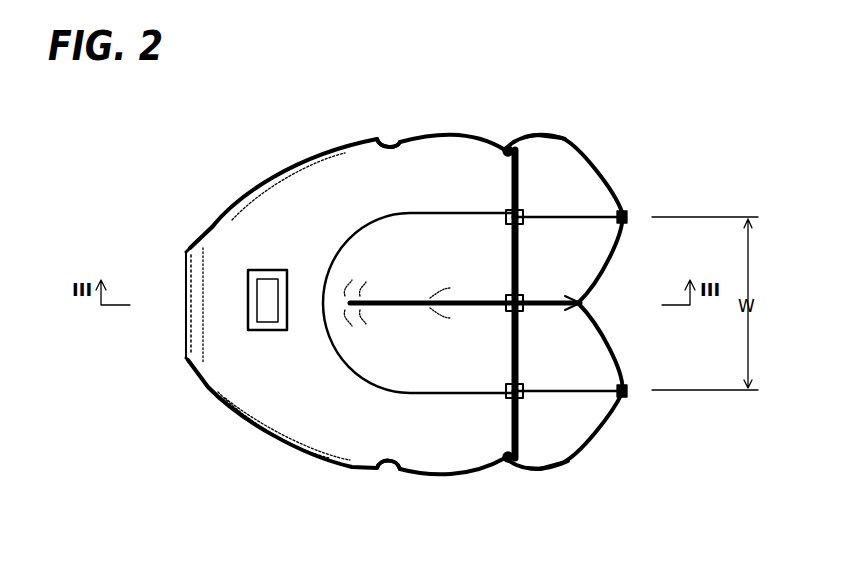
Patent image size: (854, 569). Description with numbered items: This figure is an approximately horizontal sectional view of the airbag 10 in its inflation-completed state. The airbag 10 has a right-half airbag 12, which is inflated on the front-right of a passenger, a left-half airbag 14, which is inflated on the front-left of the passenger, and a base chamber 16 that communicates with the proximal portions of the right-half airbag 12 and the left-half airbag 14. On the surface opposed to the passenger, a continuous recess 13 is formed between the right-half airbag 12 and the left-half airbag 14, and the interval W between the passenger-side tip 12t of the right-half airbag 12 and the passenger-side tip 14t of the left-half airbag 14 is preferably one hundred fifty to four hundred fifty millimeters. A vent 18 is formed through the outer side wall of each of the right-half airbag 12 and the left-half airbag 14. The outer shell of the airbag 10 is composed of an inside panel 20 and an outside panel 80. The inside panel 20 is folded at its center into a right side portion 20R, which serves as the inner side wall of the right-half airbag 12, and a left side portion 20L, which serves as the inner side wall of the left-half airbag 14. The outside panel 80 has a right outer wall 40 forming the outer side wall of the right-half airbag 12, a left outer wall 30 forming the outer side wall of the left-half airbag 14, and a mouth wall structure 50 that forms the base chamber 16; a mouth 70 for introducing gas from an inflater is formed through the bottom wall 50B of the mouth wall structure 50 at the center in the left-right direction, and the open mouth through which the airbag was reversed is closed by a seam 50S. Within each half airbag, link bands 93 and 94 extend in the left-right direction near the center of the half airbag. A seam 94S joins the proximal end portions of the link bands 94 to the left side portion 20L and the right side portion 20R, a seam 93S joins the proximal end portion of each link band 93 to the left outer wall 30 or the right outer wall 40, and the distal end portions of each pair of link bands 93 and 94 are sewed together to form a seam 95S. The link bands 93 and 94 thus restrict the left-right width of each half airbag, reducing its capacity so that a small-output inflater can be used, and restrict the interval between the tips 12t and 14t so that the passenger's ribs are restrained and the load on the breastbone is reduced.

The airbag 10 is at (613, 288).
The right-half airbag 12 is at (597, 196).
The tip of the right-half airbag 12t is at (630, 218).
The recess 13 is at (592, 300).
The left-half airbag 14 is at (597, 395).
The tip of the left-half airbag 14t is at (630, 393).
The base chamber 16 is at (247, 441).
The vent 18 is at (390, 137).
The inside panel 20 is at (628, 370).
The right side portion 20R is at (412, 298).
The left side portion 20L is at (396, 310).
The left outer wall 30 is at (560, 470).
The right outer wall 40 is at (556, 134).
The mouth wall structure 50 is at (245, 415).
The bottom wall 50B is at (210, 228).
The seam 50S is at (187, 263).
The mouth 70 is at (270, 330).
The outside panel 80 is at (517, 319).
The link band 93 is at (520, 170).
The seam 93S is at (507, 147).
The link band 94 is at (520, 240).
The seam 94S is at (510, 298).
The seam 95S is at (508, 214).